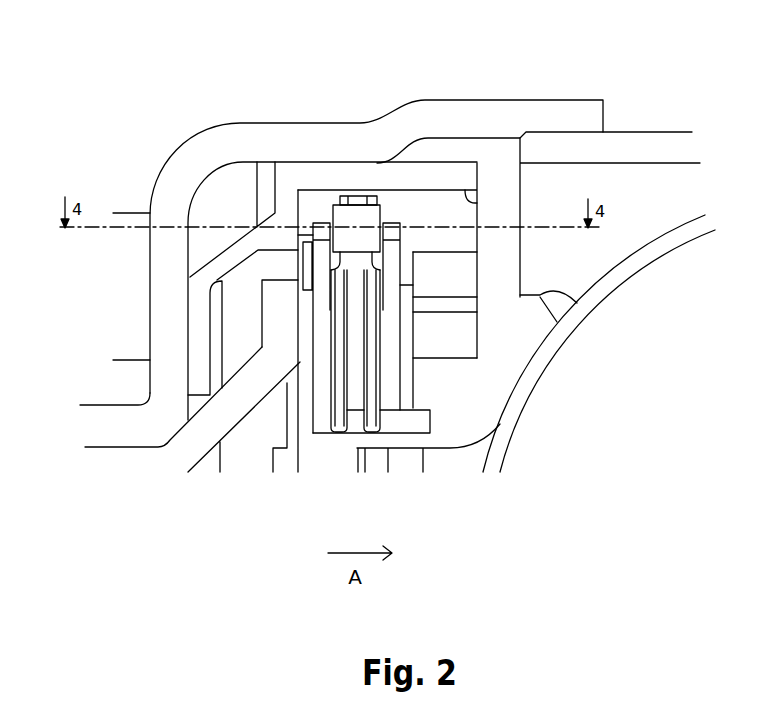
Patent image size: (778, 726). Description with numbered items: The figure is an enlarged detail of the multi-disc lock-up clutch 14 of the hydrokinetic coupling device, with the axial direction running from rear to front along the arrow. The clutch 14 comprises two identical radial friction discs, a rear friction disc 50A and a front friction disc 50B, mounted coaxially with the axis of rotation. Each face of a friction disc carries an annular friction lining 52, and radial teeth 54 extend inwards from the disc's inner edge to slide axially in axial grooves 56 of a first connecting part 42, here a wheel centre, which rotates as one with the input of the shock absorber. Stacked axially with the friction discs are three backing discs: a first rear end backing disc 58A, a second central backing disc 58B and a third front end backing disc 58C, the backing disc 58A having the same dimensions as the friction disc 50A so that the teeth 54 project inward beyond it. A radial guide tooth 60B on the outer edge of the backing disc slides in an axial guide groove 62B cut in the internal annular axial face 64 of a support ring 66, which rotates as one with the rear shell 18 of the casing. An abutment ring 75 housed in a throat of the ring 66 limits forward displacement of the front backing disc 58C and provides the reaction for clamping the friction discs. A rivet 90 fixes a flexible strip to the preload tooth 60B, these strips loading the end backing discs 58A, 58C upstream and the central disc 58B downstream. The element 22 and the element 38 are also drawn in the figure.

The lock-up clutch 14 is at (365, 238).
The rear shell 18 is at (194, 154).
The ring gear 22 is at (670, 240).
The rib 38 is at (287, 310).
The first connecting part 42 is at (320, 460).
The rear friction disc 50A is at (292, 380).
The front friction disc 50B is at (373, 358).
The friction lining 52 is at (345, 343).
The radial teeth 54 is at (363, 420).
The axial grooves 56 is at (407, 423).
The first rear end backing disc 58A is at (320, 277).
The second central backing disc 58B is at (388, 284).
The third front end backing disc 58C is at (413, 287).
The guide tooth 60B is at (323, 225).
The axial guide groove 62B is at (460, 222).
The internal annular axial face 64 is at (472, 215).
The support ring 66 is at (323, 181).
The abutment ring 75 is at (402, 262).
The rivet 90 is at (360, 222).